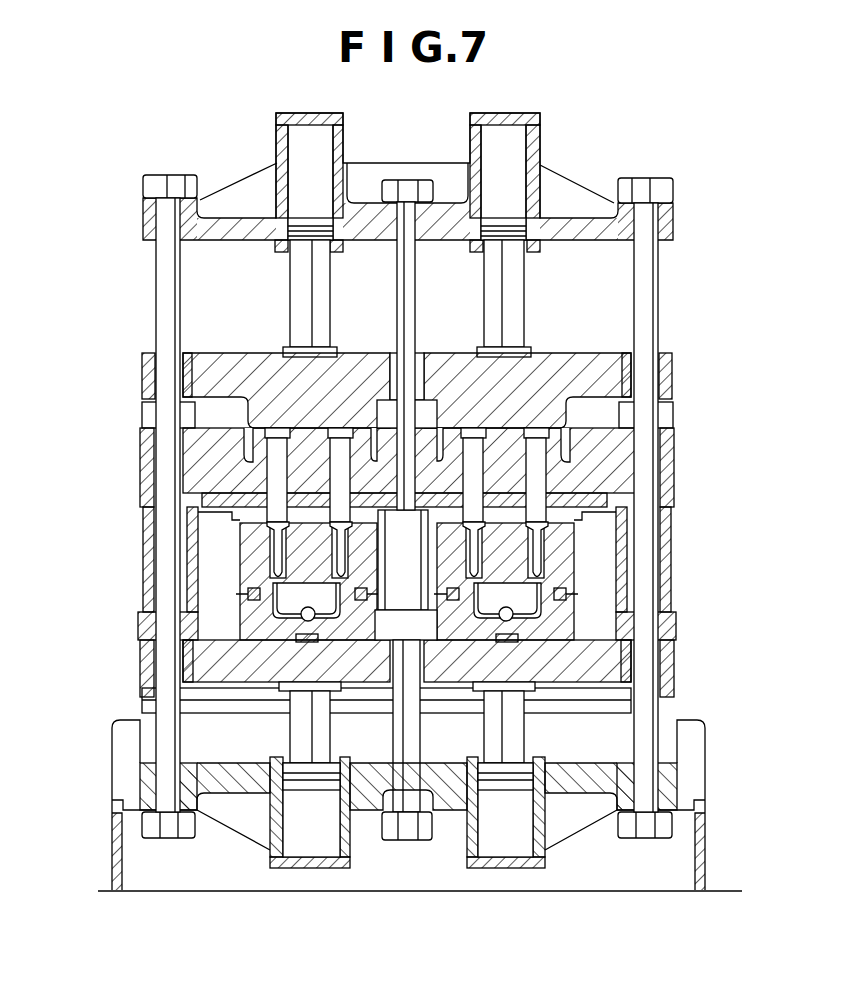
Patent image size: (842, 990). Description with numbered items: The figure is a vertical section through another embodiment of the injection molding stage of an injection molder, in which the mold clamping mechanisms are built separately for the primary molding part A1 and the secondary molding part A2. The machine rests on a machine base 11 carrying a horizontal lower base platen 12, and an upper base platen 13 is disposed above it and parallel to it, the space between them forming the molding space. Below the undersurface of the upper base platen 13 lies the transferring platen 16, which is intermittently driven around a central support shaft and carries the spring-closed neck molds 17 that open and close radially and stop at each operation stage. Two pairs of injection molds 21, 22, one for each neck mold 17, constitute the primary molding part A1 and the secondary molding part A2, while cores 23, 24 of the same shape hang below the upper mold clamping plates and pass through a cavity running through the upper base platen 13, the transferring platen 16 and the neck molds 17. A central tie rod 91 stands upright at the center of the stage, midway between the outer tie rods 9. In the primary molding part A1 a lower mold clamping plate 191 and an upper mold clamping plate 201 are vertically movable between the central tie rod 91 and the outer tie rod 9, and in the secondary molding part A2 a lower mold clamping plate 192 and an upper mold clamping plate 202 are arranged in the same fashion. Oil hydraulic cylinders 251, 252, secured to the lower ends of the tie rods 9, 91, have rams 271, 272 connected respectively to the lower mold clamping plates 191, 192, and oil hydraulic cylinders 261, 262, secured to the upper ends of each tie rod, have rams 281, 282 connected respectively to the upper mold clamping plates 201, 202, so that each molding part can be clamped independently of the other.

The oil hydraulic cylinder 261 is at (280, 150).
The oil hydraulic cylinder 262 is at (540, 150).
The ram 281 is at (305, 284).
The ram 282 is at (515, 293).
The tie rod 91 is at (405, 285).
The upper mold clamping plate 201 is at (250, 366).
The upper mold clamping plate 202 is at (565, 366).
The upper base platen 13 is at (215, 470).
The transferring platen 16 is at (592, 490).
The neck mold 17 is at (187, 524).
The primary molding part A1 is at (228, 565).
The secondary molding part A2 is at (586, 565).
The core 23 is at (277, 545).
The core 24 is at (535, 549).
The injection mold 21 is at (258, 565).
The injection mold 22 is at (555, 578).
The tie rod 9 is at (163, 587).
The lower mold clamping plate 191 is at (203, 665).
The lower mold clamping plate 192 is at (602, 667).
The lower base platen 12 is at (196, 707).
The machine base 11 is at (122, 742).
The ram 271 is at (295, 735).
The ram 272 is at (503, 730).
The oil hydraulic cylinder 251 is at (275, 822).
The oil hydraulic cylinder 252 is at (540, 822).